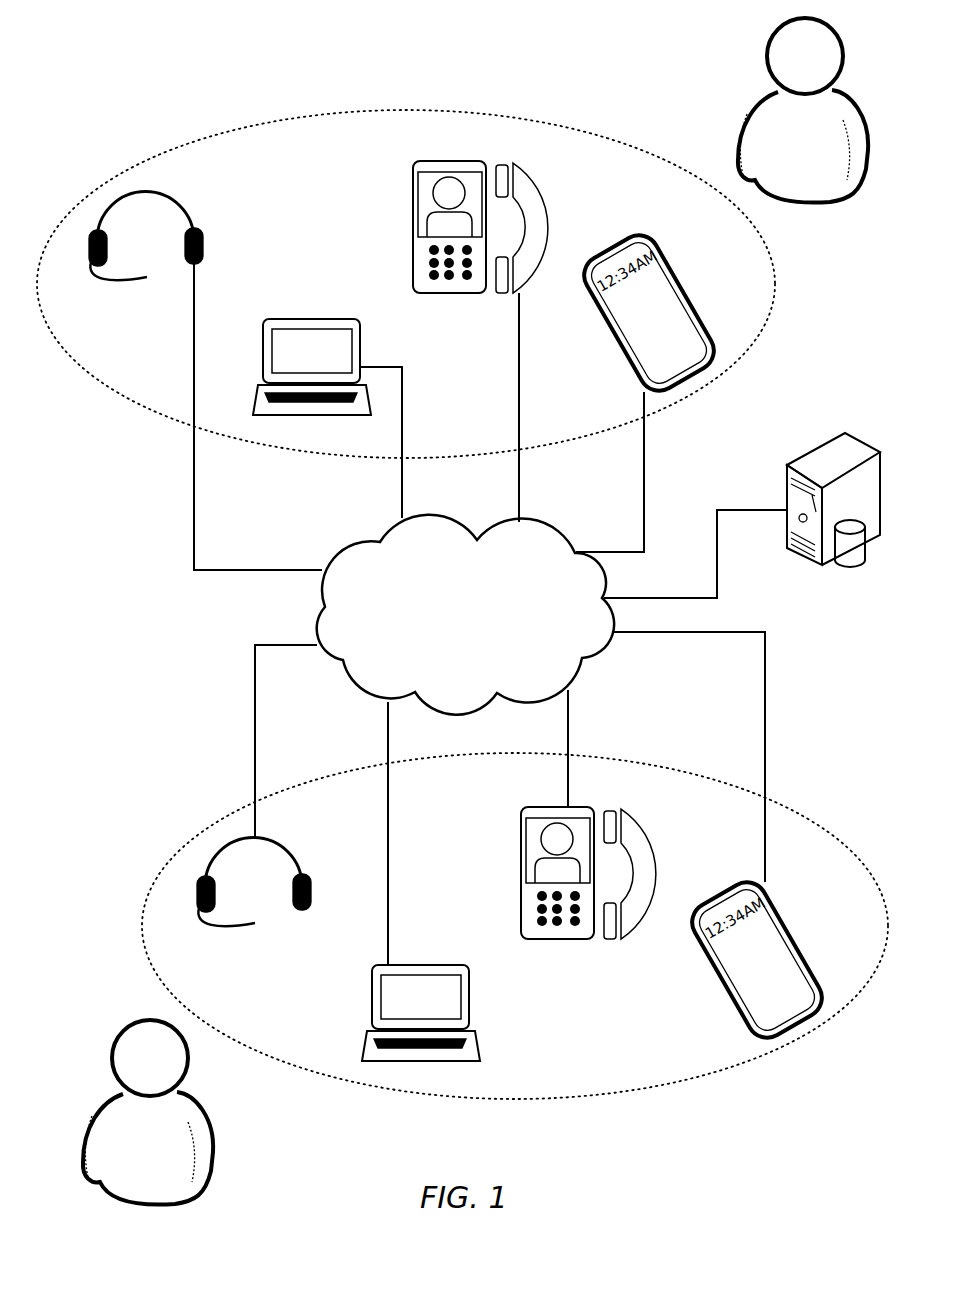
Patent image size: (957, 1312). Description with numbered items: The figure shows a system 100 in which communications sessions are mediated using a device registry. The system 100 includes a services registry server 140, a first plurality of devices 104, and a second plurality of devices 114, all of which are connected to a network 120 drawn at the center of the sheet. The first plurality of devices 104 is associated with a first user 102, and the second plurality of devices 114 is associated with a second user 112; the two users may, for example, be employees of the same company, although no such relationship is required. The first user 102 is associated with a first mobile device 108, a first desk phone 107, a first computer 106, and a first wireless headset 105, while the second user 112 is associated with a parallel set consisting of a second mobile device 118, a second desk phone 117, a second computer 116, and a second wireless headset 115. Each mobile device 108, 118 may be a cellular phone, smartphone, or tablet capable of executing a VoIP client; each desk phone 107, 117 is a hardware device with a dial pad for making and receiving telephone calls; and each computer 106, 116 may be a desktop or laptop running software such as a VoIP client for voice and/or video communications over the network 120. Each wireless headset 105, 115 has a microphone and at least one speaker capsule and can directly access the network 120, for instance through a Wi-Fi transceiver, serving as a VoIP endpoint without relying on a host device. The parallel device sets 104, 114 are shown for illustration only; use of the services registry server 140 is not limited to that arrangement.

The system 100 is at (117, 30).
The first user 102 is at (148, 1112).
The first plurality of devices 104 is at (658, 1092).
The first wireless headset 105 is at (294, 860).
The first computer 106 is at (469, 966).
The first desk phone 107 is at (590, 808).
The first mobile device 108 is at (792, 928).
The second user 112 is at (803, 110).
The second plurality of devices 114 is at (455, 112).
The second wireless headset 115 is at (187, 214).
The second computer 116 is at (357, 318).
The second desk phone 117 is at (484, 162).
The second mobile device 118 is at (682, 282).
The network 120 is at (465, 615).
The services registry server 140 is at (822, 421).